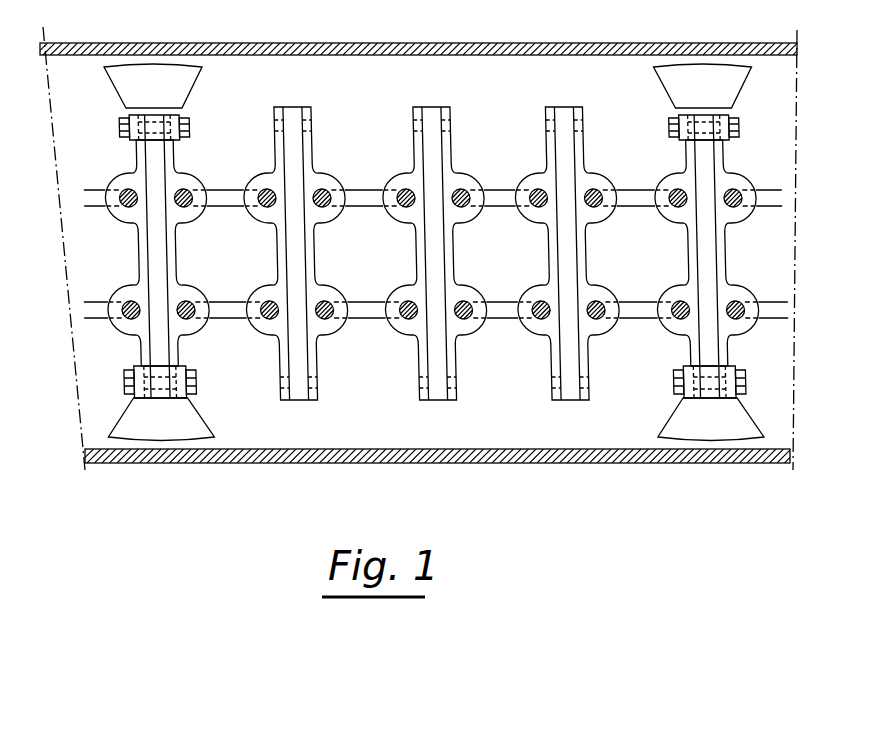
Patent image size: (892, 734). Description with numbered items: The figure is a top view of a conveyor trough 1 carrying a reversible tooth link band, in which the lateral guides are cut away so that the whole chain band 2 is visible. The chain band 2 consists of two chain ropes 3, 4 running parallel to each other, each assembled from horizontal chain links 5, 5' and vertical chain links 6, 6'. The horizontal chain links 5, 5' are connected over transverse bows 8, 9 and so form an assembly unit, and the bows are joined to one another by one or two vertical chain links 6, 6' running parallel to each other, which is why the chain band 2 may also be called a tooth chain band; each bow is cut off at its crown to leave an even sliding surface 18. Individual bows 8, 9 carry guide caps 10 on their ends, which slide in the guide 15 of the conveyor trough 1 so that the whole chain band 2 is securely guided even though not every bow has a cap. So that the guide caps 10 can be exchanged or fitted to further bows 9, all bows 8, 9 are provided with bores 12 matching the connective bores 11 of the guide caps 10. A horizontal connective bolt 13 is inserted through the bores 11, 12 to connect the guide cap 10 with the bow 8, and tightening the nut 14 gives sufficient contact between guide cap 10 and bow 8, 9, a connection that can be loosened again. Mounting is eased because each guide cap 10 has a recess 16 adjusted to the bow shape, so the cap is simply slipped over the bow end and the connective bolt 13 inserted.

The conveyor trough 1 is at (362, 423).
The chain band 2 is at (398, 262).
The chain rope 3 is at (742, 193).
The chain rope 4 is at (748, 317).
The horizontal chain link 5 is at (122, 331).
The horizontal chain link 5' is at (116, 218).
The vertical chain link 6 is at (229, 350).
The vertical chain link 6' is at (225, 161).
The bow 8 is at (144, 152).
The bow 9 is at (305, 167).
The guide cap 10 is at (135, 85).
The connective bore 11 is at (124, 125).
The bore 12 is at (154, 127).
The connective bolt 13 is at (181, 398).
The nut 14 is at (118, 387).
The guide 15 is at (102, 443).
The recess 16 is at (130, 418).
The sliding surface 18 is at (430, 360).